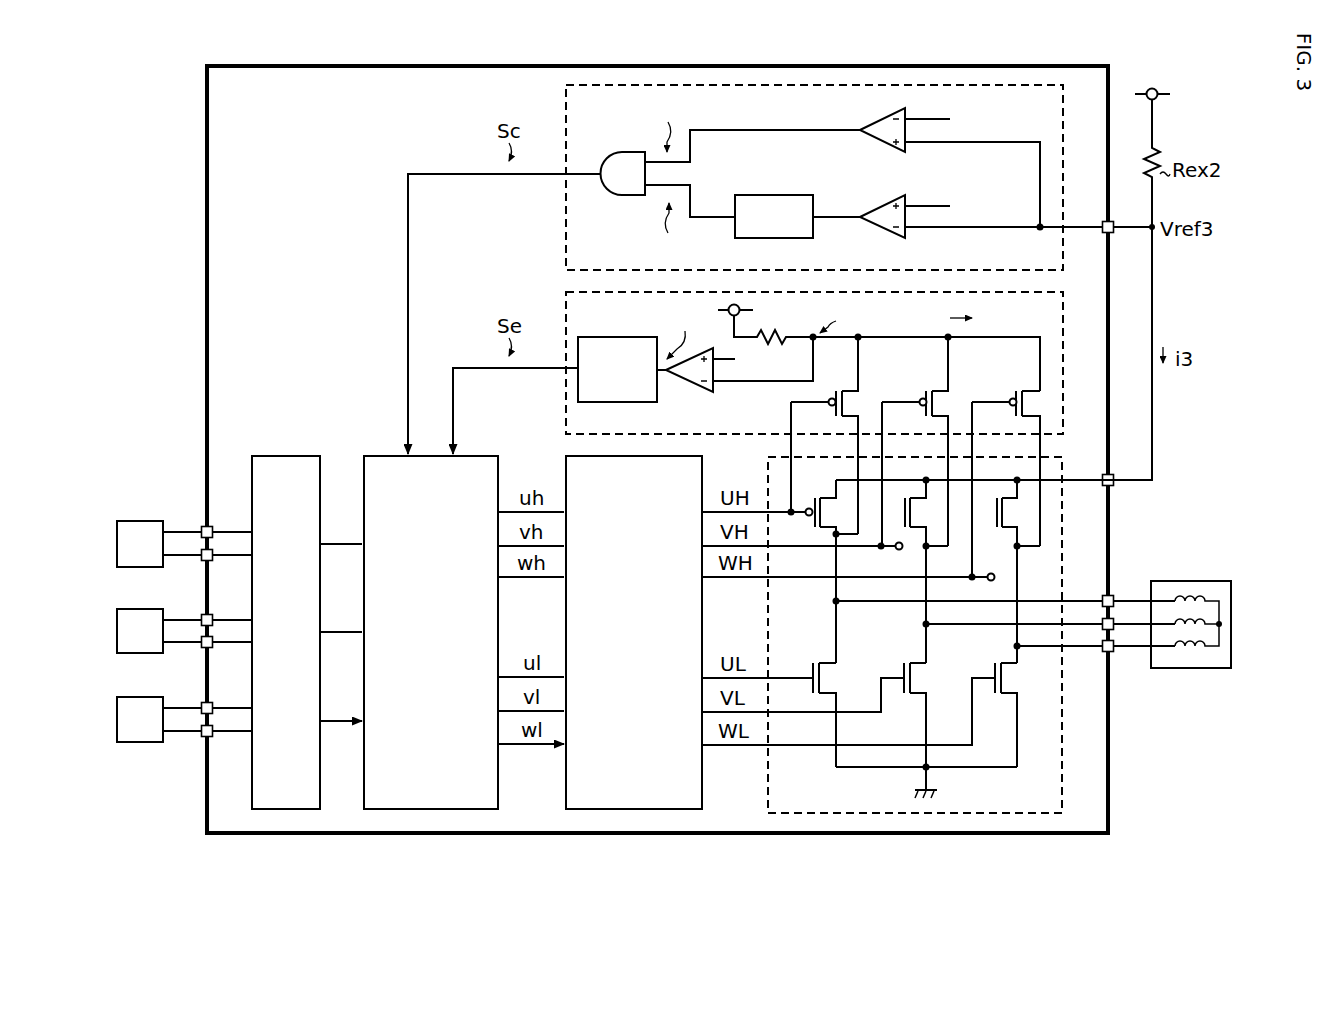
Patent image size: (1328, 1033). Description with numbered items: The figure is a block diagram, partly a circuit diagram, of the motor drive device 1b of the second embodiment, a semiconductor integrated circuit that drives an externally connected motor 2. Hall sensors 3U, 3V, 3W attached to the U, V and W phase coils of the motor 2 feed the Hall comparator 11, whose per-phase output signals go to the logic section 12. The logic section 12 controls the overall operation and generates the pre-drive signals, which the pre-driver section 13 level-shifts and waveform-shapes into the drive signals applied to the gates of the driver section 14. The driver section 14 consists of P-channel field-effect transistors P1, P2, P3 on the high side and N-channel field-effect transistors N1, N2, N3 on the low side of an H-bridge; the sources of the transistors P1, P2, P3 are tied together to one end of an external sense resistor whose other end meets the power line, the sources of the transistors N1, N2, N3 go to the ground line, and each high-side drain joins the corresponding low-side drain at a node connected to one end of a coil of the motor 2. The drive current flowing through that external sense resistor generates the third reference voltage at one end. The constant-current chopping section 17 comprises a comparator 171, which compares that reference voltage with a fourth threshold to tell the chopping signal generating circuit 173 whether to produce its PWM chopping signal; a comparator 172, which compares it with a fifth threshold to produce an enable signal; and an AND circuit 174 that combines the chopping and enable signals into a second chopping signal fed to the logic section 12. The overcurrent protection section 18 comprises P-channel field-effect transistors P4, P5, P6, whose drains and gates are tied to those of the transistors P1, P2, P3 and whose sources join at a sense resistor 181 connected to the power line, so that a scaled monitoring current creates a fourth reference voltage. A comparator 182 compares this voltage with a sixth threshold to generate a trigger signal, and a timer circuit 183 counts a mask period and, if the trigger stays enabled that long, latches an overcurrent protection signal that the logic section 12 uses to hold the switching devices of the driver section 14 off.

The motor drive device 1b is at (1108, 751).
The motor 2 is at (1193, 581).
The Hall sensor 3U is at (141, 520).
The Hall sensor 3V is at (141, 608).
The Hall sensor 3W is at (141, 696).
The Hall comparator 11 is at (253, 789).
The logic section 12 is at (365, 789).
The pre-driver section 13 is at (566, 789).
The driver section 14 is at (768, 789).
The constant-current chopping section 17 is at (565, 226).
The overcurrent protection section 18 is at (565, 403).
The comparator 171 is at (877, 230).
The comparator 172 is at (877, 145).
The chopping signal generating circuit 173 is at (774, 195).
The AND circuit 174 is at (624, 195).
The sense resistor 181 is at (765, 321).
The comparator 182 is at (686, 382).
The timer circuit 183 is at (618, 402).
The P-channel field-effect transistor P1 is at (806, 523).
The P-channel field-effect transistor P2 is at (910, 530).
The P-channel field-effect transistor P3 is at (1000, 530).
The P-channel field-effect transistor P4 is at (832, 393).
The P-channel field-effect transistor P5 is at (922, 393).
The P-channel field-effect transistor P6 is at (1013, 393).
The N-channel field-effect transistor N1 is at (811, 673).
The N-channel field-effect transistor N2 is at (901, 673).
The N-channel field-effect transistor N3 is at (991, 673).